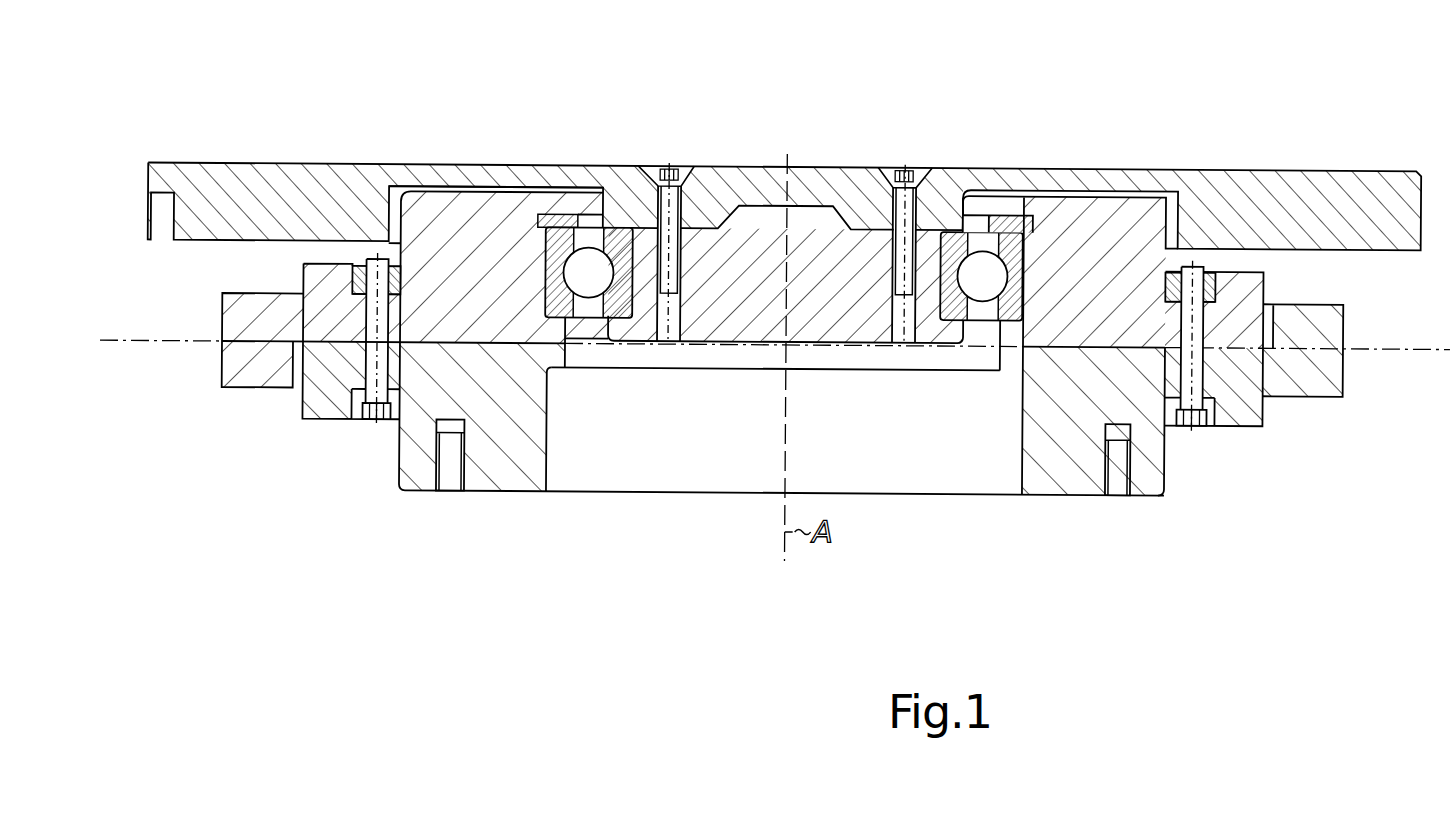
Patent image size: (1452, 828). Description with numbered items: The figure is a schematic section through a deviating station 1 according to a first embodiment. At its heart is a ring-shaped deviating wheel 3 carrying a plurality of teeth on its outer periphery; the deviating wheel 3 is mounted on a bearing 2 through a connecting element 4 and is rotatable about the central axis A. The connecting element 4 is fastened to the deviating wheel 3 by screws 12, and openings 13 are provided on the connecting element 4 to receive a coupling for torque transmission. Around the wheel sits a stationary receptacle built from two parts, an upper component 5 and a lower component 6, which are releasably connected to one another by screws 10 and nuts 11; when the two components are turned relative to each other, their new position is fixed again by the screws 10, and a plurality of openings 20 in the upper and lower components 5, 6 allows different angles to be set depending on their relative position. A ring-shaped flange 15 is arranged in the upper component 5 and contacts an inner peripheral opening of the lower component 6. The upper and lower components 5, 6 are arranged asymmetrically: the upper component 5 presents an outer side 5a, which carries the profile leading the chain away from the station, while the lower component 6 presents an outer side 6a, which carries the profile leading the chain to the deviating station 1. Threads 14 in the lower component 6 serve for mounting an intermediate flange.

The deviating station 1 is at (270, 68).
The bearing 2 is at (948, 232).
The deviating wheel 3 is at (1257, 185).
The connecting element 4 is at (847, 250).
The upper component 5 is at (477, 205).
The outer side 5a is at (218, 354).
The lower component 6 is at (513, 466).
The outer side 6a is at (1346, 355).
The screws 10 is at (362, 392).
The nuts 11 is at (357, 264).
The screws 12 is at (950, 249).
The openings 13 is at (907, 327).
The threads 14 is at (440, 480).
The ring-shaped flange 15 is at (1043, 355).
The openings 20 is at (360, 366).